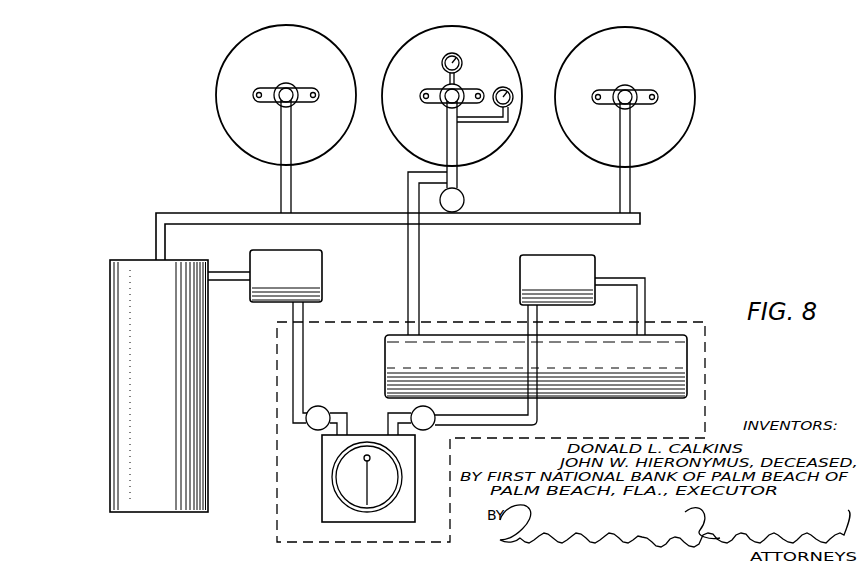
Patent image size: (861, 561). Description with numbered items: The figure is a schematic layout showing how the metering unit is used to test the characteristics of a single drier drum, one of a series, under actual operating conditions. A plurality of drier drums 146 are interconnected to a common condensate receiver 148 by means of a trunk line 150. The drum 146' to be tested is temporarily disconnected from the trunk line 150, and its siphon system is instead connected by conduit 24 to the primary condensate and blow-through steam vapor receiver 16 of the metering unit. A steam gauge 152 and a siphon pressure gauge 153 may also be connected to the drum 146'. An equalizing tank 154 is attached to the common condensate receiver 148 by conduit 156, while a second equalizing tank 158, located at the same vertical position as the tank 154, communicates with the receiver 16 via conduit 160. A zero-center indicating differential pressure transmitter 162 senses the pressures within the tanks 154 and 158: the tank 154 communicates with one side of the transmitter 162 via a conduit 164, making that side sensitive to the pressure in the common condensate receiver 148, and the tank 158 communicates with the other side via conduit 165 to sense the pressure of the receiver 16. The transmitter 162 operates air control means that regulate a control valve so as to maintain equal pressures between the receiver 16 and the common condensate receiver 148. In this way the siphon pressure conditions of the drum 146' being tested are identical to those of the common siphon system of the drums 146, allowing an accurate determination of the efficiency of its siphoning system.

The primary condensate and blow-through steam vapor receiver 16 is at (688, 369).
The conduit 24 is at (419, 293).
The drier drums 146 is at (478, 112).
The drum to be tested 146' is at (468, 110).
The common condensate receiver 148 is at (118, 358).
The trunk line 150 is at (358, 186).
The steam gauge 152 is at (462, 40).
The siphon pressure gauge 153 is at (497, 89).
The equalizing tank 154 is at (365, 240).
The conduit 156 is at (221, 272).
The equalizing tank 158 is at (585, 255).
The conduit 160 is at (645, 305).
The zero-center indicating differential pressure transmitter 162 is at (328, 490).
The conduit 164 is at (305, 386).
The conduit 165 is at (520, 433).